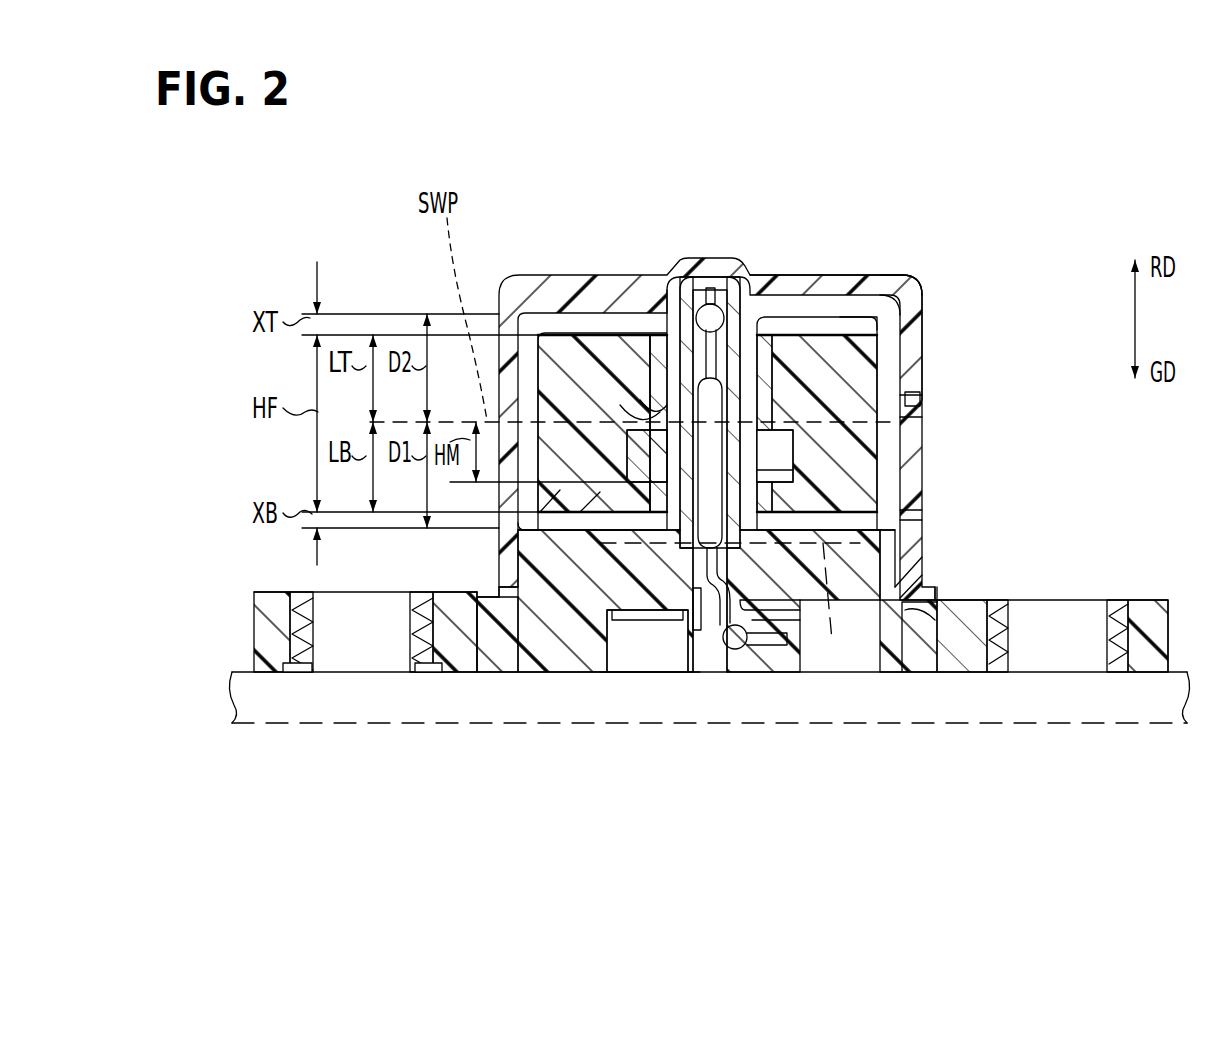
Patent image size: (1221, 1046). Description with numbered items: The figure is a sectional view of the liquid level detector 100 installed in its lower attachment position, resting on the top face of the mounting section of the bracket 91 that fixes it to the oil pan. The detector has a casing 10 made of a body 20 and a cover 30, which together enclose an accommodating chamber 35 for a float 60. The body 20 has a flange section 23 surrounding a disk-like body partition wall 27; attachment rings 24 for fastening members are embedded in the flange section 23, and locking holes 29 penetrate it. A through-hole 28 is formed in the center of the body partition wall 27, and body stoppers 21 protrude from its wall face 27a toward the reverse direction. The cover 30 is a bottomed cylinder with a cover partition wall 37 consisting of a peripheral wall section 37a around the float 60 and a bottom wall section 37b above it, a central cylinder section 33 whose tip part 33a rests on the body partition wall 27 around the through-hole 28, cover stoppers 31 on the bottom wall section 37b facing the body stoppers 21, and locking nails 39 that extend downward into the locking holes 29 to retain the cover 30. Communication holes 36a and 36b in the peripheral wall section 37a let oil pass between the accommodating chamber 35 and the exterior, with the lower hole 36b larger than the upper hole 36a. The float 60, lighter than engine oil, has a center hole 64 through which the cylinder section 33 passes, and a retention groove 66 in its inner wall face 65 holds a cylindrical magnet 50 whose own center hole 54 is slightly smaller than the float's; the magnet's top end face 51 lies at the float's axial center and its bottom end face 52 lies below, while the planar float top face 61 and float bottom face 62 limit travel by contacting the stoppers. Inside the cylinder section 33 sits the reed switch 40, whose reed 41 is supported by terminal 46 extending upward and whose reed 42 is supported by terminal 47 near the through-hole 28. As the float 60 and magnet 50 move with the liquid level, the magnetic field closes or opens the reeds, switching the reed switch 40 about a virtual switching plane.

The casing 10 is at (1012, 525).
The body 20 is at (940, 605).
The body stoppers 21 is at (803, 560).
The flange section 23 is at (270, 672).
The attachment rings 24 is at (404, 660).
The body partition wall 27 is at (836, 560).
The wall face 27a is at (770, 610).
The through-hole 28 is at (696, 600).
The locking holes 29 is at (916, 650).
The cover 30 is at (930, 562).
The cover stoppers 31 is at (866, 300).
The cylinder section 33 is at (658, 362).
The tip part 33a is at (646, 485).
The accommodating chamber 35 is at (800, 332).
The communication hole 36a is at (914, 394).
The communication hole 36b is at (914, 521).
The cover partition wall 37 is at (1013, 270).
The peripheral wall section 37a is at (906, 306).
The bottom wall section 37b is at (912, 288).
The locking nails 39 is at (932, 665).
The reed switch 40 is at (735, 340).
The reed 41 is at (718, 330).
The reed 42 is at (760, 650).
The terminal 46 is at (704, 395).
The terminal 47 is at (712, 600).
The magnet 50 is at (795, 451).
The top end face 51 is at (895, 321).
The bottom end face 52 is at (598, 515).
The center hole 54 is at (596, 382).
The float 60 is at (906, 411).
The float top face 61 is at (552, 333).
The float bottom face 62 is at (556, 515).
The center hole 64 is at (648, 404).
The inner wall face 65 is at (640, 412).
The retention groove 66 is at (795, 473).
The bracket 91 is at (1062, 725).
The liquid level detector 100 is at (910, 252).